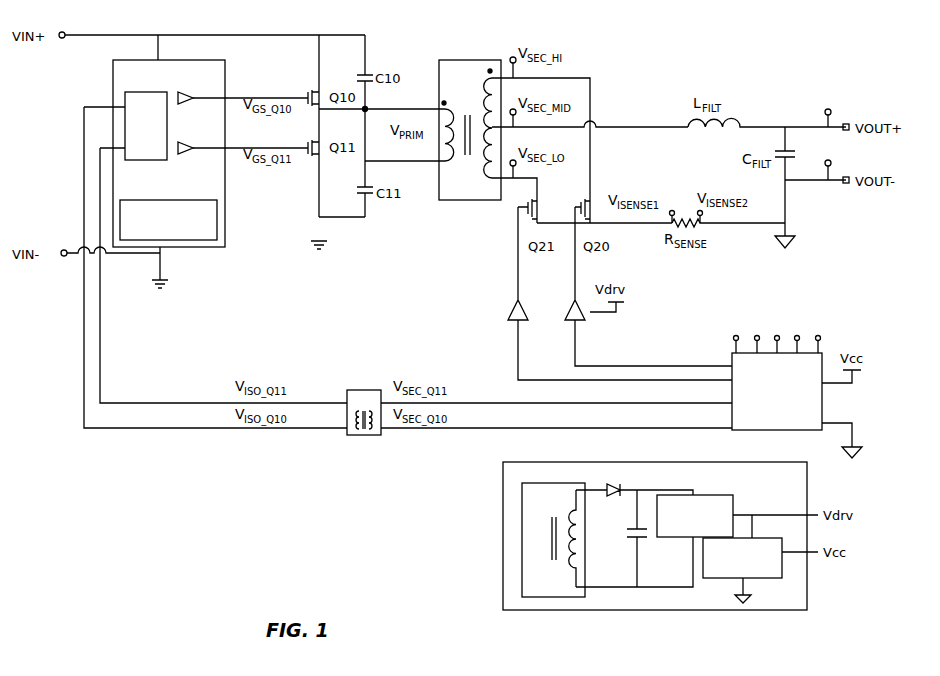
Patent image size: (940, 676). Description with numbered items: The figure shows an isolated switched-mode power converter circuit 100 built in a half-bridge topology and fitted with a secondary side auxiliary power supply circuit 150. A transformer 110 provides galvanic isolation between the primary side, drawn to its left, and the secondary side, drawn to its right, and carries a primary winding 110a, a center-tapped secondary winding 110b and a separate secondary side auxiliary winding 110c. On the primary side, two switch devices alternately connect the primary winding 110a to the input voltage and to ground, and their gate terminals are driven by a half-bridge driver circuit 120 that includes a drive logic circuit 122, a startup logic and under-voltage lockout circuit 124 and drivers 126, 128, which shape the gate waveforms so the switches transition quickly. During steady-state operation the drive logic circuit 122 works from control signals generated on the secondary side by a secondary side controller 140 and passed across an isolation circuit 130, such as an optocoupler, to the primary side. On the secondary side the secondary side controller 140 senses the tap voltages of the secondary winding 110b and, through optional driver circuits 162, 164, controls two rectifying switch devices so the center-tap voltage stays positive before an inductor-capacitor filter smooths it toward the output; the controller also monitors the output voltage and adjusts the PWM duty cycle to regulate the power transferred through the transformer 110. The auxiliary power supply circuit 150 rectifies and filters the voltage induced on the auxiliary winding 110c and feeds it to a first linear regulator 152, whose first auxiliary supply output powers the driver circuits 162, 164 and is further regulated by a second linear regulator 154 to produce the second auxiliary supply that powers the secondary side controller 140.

The isolated switched-mode power converter circuit 100 is at (823, 57).
The transformer 110 is at (470, 120).
The primary winding 110a is at (457, 142).
The secondary winding 110b is at (482, 133).
The secondary side auxiliary winding 110c is at (553, 531).
The half-bridge driver circuit 120 is at (210, 141).
The drive logic circuit 122 is at (146, 126).
The startup logic and under-voltage lockout circuit 124 is at (168, 210).
The driver 126 is at (243, 91).
The driver 128 is at (243, 141).
The isolation circuit 130 is at (364, 404).
The secondary side controller 140 is at (779, 367).
The secondary side auxiliary power supply circuit 150 is at (660, 526).
The first linear regulator 152 is at (695, 507).
The second linear regulator 154 is at (742, 546).
The driver circuit 162 is at (609, 293).
The driver circuit 164 is at (637, 286).